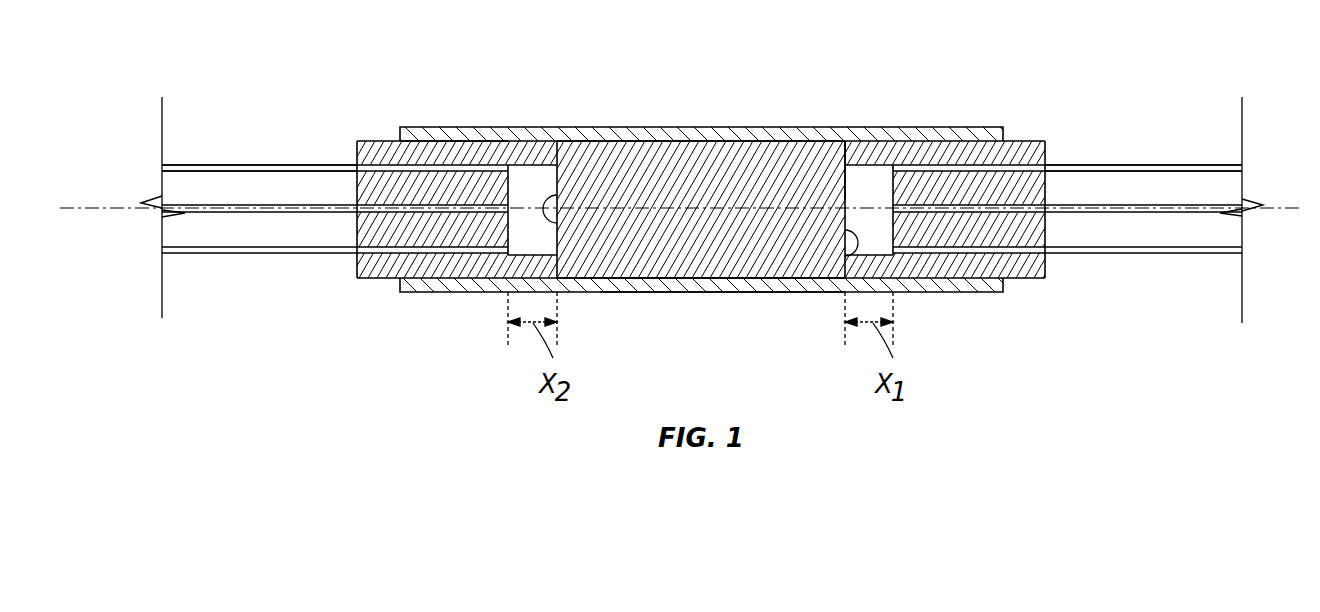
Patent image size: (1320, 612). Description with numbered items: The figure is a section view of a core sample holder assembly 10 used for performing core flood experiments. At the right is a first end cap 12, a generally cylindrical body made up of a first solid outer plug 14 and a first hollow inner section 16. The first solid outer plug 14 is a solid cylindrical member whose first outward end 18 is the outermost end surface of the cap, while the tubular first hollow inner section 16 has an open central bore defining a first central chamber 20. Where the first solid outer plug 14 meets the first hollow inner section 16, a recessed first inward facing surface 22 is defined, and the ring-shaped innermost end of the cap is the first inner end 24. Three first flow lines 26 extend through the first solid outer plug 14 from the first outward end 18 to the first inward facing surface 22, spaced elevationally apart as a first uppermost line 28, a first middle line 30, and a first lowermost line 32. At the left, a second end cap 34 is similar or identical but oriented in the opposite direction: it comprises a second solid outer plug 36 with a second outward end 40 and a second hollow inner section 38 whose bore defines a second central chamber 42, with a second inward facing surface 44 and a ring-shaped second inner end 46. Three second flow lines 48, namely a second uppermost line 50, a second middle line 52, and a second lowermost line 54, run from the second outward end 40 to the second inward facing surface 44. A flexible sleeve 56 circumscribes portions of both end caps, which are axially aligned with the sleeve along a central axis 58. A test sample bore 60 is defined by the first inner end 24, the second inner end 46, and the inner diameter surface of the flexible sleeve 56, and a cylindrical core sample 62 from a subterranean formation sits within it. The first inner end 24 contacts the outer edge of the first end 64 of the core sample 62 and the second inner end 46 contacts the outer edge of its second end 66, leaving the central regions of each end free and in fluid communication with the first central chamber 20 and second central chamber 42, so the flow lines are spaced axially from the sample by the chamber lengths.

The core sample holder assembly 10 is at (875, 85).
The first end cap 12 is at (1012, 131).
The first solid outer plug 14 is at (1040, 260).
The first hollow inner section 16 is at (872, 160).
The first outward end 18 is at (1045, 192).
The first central chamber 20 is at (848, 171).
The first inward facing surface 22 is at (893, 186).
The first inner end 24 is at (850, 172).
The first flow lines 26 is at (1142, 258).
The first uppermost line 28 is at (1133, 163).
The first middle line 30 is at (1133, 205).
The first lowermost line 32 is at (1133, 246).
The second end cap 34 is at (378, 137).
The second solid outer plug 36 is at (360, 262).
The second hollow inner section 38 is at (542, 152).
The second outward end 40 is at (357, 183).
The second central chamber 42 is at (558, 186).
The second inward facing surface 44 is at (509, 186).
The second inner end 46 is at (560, 260).
The second flow lines 48 is at (257, 140).
The second uppermost line 50 is at (247, 162).
The second middle line 52 is at (247, 207).
The second lowermost line 54 is at (247, 245).
The flexible sleeve 56 is at (742, 292).
The central axis 58 is at (698, 205).
The test sample bore 60 is at (780, 273).
The core sample 62 is at (720, 158).
The first end 64 is at (845, 257).
The second end 66 is at (560, 228).